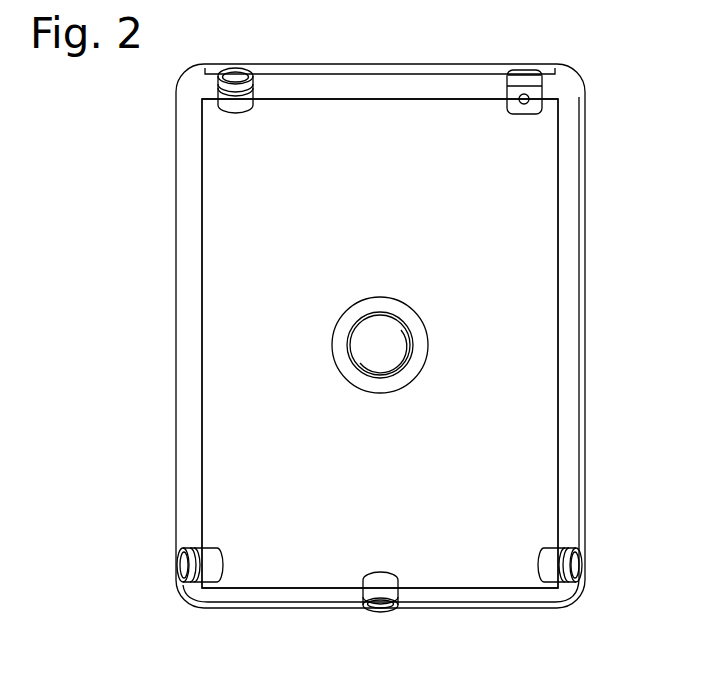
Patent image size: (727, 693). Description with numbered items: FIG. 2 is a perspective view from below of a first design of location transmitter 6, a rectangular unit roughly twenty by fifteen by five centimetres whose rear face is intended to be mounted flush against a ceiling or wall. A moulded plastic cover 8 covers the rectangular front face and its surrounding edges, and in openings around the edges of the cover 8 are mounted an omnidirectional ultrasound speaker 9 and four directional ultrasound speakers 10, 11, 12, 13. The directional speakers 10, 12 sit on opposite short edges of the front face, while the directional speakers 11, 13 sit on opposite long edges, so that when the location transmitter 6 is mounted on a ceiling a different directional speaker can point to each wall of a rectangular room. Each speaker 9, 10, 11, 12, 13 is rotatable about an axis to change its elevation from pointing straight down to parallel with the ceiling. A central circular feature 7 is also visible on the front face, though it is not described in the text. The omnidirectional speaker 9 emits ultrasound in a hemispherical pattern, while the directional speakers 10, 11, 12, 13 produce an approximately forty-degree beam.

The location transmitter 6 is at (618, 271).
The central opening 7 is at (380, 345).
The moulded plastic cover 8 is at (232, 402).
The omnidirectional ultrasound speaker 9 is at (524, 86).
The directional ultrasound speaker 10 is at (237, 73).
The directional ultrasound speaker 11 is at (180, 560).
The directional ultrasound speaker 12 is at (383, 612).
The directional ultrasound speaker 13 is at (578, 562).